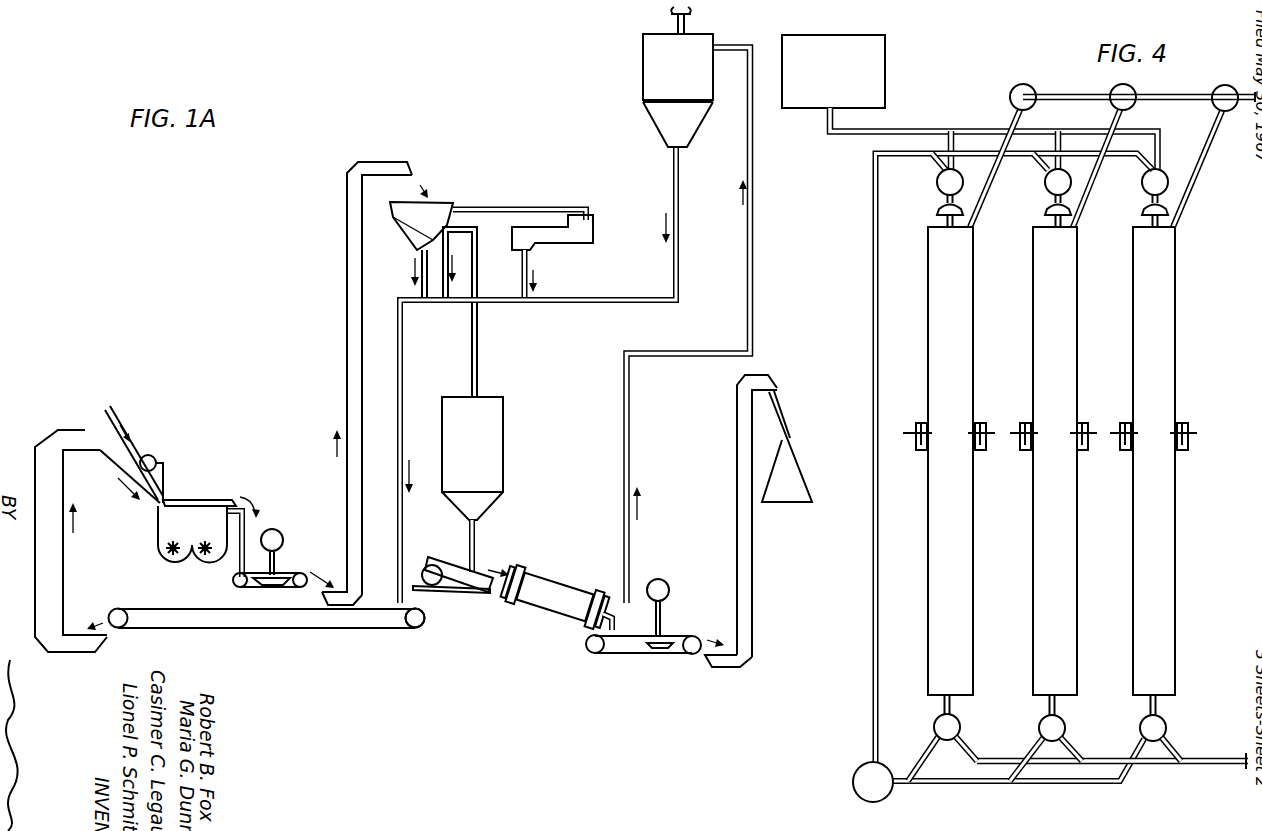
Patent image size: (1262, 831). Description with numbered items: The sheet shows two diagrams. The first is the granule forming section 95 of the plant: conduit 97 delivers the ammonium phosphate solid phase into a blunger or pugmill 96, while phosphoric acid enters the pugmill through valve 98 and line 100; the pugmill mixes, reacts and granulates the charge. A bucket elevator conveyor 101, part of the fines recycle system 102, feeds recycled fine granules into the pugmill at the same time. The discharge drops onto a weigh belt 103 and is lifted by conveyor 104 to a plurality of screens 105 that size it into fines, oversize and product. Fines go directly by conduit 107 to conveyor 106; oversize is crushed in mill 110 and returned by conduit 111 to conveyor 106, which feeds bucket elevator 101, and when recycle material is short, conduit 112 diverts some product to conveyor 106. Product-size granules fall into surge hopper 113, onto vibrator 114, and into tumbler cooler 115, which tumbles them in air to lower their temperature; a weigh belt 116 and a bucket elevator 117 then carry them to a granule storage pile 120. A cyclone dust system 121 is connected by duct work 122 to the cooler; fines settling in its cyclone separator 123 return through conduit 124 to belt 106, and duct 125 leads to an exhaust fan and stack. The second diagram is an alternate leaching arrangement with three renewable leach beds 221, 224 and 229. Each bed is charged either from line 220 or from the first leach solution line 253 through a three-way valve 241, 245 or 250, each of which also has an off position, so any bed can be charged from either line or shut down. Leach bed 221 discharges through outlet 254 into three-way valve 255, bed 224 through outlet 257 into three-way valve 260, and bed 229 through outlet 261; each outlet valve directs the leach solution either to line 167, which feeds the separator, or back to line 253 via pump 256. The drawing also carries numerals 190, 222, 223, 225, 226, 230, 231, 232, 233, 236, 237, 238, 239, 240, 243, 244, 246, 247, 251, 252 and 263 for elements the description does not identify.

In FIG. 1A, the granule forming section 95 is at (293, 241).
In FIG. 1A, the blunger 96 is at (197, 517).
In FIG. 1A, the conduit 97 is at (100, 413).
In FIG. 1A, the valve 98 is at (155, 456).
In FIG. 1A, the line 100 is at (165, 478).
In FIG. 1A, the bucket elevator conveyor 101 is at (50, 562).
In FIG. 1A, the recycle system 102 is at (305, 661).
In FIG. 1A, the weigh belt 103 is at (285, 575).
In FIG. 1A, the conveyor 104 is at (355, 313).
In FIG. 1A, the plurality of screens 105 is at (437, 212).
In FIG. 1A, the conveyor 106 is at (392, 620).
In FIG. 1A, the conduit 107 is at (427, 247).
In FIG. 1A, the mill 110 is at (587, 237).
In FIG. 1A, the conduit 111 is at (530, 272).
In FIG. 1A, the conduit 112 is at (447, 293).
In FIG. 1A, the surge hopper 113 is at (475, 453).
In FIG. 1A, the vibrator 114 is at (452, 580).
In FIG. 1A, the tumbler cooler 115 is at (558, 593).
In FIG. 1A, the weigh belt 116 is at (635, 647).
In FIG. 1A, the bucket elevator 117 is at (743, 492).
In FIG. 1A, the granule storage pile 120 is at (792, 482).
In FIG. 1A, the cyclone dust system 121 is at (746, 83).
In FIG. 1A, the duct work 122 is at (750, 173).
In FIG. 1A, the cyclone separator 123 is at (665, 57).
In FIG. 1A, the conduit 124 is at (680, 178).
In FIG. 1A, the duct 125 is at (676, 20).
In FIG. 4, the pressure source 190 is at (850, 83).
In FIG. 4, the line 220 is at (853, 134).
In FIG. 4, the leach bed 221 is at (943, 296).
In FIG. 4, the level sensor 222 is at (916, 423).
In FIG. 4, the level sensor 223 is at (983, 422).
In FIG. 4, the leach bed 224 is at (1060, 310).
In FIG. 4, the level sensor 225 is at (1022, 450).
In FIG. 4, the level sensor 226 is at (1087, 450).
In FIG. 4, the leach bed 229 is at (1168, 310).
In FIG. 4, the level sensor 230 is at (1123, 423).
In FIG. 4, the level sensor 231 is at (1188, 423).
In FIG. 4, the vacuum line 232 is at (1247, 112).
In FIG. 4, the valve 233 is at (1230, 85).
In FIG. 4, the vacuum line 236 is at (1197, 183).
In FIG. 4, the valve 237 is at (1133, 89).
In FIG. 4, the vacuum line 238 is at (1081, 205).
In FIG. 4, the valve 239 is at (1023, 84).
In FIG. 4, the vacuum line 240 is at (1010, 118).
In FIG. 4, the three-way valve 241 is at (937, 187).
In FIG. 4, the inlet dome 243 is at (940, 207).
In FIG. 4, the column inlet 244 is at (930, 228).
In FIG. 4, the three-way valve 245 is at (1046, 187).
In FIG. 4, the inlet dome 246 is at (1045, 205).
In FIG. 4, the column inlet 247 is at (1040, 215).
In FIG. 4, the three-way valve 250 is at (1143, 189).
In FIG. 4, the inlet dome 251 is at (1148, 206).
In FIG. 4, the column inlet 252 is at (1170, 214).
In FIG. 4, the first leach solution line 253 is at (895, 152).
In FIG. 4, the outlet 254 is at (952, 703).
In FIG. 4, the three way valve 255 is at (958, 726).
In FIG. 4, the pump 256 is at (853, 780).
In FIG. 4, the outlet 257 is at (1058, 703).
In FIG. 4, the three way valve 260 is at (1065, 723).
In FIG. 4, the outlet 261 is at (1160, 704).
In FIG. 4, the outlet branch 263 is at (1168, 721).
In FIG. 4, the line 167 is at (1197, 759).